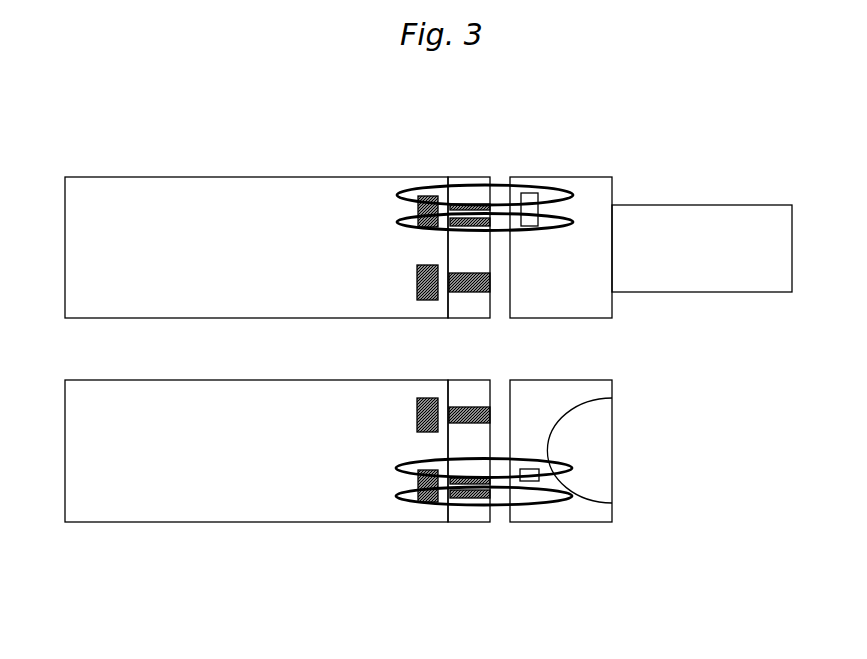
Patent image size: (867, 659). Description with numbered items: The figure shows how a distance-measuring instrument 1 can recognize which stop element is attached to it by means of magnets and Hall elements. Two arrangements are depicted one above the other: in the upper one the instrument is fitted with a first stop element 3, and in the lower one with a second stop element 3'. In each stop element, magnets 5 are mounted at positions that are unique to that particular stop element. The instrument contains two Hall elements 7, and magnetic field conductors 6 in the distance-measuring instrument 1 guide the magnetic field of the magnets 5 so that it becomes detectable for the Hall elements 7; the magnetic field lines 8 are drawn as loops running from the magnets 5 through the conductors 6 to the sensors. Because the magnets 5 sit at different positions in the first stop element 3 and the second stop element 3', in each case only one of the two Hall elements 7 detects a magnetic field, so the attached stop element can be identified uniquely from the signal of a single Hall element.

The distance-measuring instrument 1 is at (262, 280).
The first stop element 3 is at (618, 208).
The second stop element 3' is at (620, 487).
The magnet 5 is at (530, 205).
The magnetic field conductor 6 is at (478, 200).
The Hall element 7 is at (420, 265).
The magnetic field lines 8 is at (566, 222).